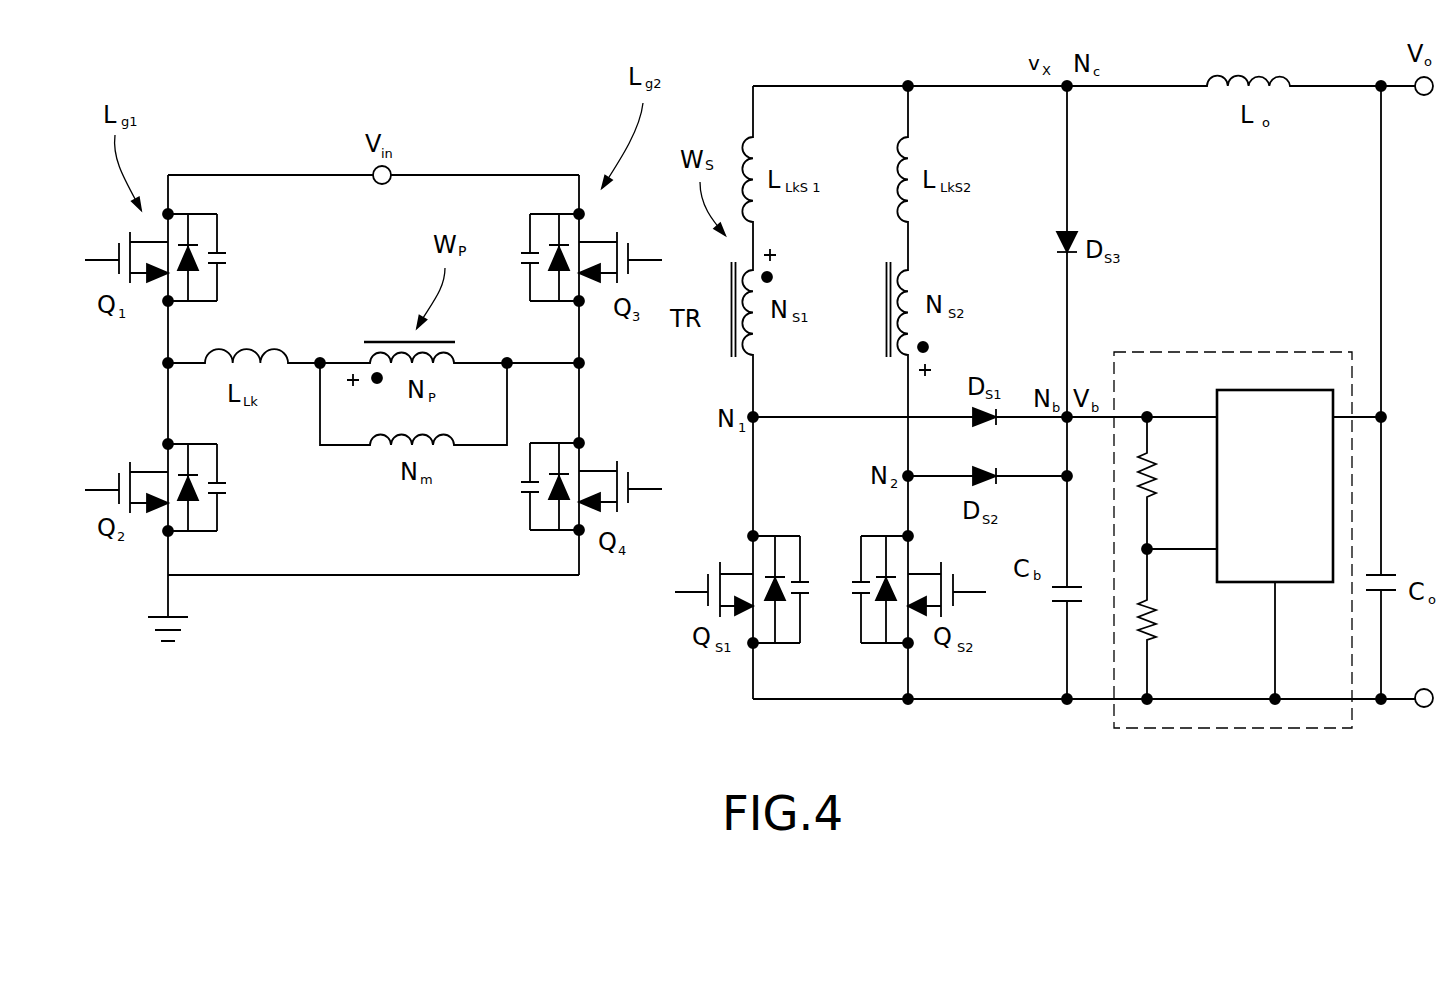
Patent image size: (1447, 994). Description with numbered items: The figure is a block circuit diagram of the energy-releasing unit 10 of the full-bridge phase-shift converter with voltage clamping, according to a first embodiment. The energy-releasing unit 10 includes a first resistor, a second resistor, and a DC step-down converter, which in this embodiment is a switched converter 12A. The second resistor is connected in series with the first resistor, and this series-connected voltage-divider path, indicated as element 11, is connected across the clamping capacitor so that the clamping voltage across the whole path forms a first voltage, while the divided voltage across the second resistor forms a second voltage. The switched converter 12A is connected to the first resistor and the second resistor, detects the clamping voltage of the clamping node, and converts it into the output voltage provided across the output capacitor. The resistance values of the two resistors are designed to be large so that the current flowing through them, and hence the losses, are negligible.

The energy-releasing unit 10 is at (1233, 546).
The voltage divider (Rup, Rdn) 11 is at (1185, 672).
The switched converter 12A is at (1286, 408).